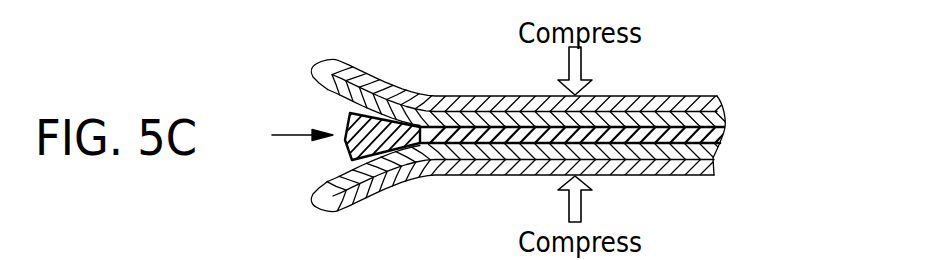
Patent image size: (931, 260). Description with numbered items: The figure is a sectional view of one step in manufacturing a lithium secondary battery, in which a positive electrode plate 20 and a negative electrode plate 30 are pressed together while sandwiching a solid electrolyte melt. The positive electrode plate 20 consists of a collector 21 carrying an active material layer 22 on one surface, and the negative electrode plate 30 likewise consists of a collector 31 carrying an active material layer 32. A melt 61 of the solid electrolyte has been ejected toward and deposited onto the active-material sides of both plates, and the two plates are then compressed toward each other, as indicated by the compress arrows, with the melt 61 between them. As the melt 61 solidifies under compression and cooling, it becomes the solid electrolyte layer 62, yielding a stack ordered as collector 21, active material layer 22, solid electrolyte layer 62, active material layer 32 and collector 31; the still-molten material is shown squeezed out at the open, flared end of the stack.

The positive electrode plate 20 is at (786, 65).
The collector 21 is at (723, 100).
The active material layer 22 is at (722, 117).
The negative electrode plate 30 is at (786, 150).
The collector 31 is at (713, 167).
The active material layer 32 is at (712, 153).
The melt 61 is at (348, 123).
The solid electrolyte layer 62 is at (722, 139).